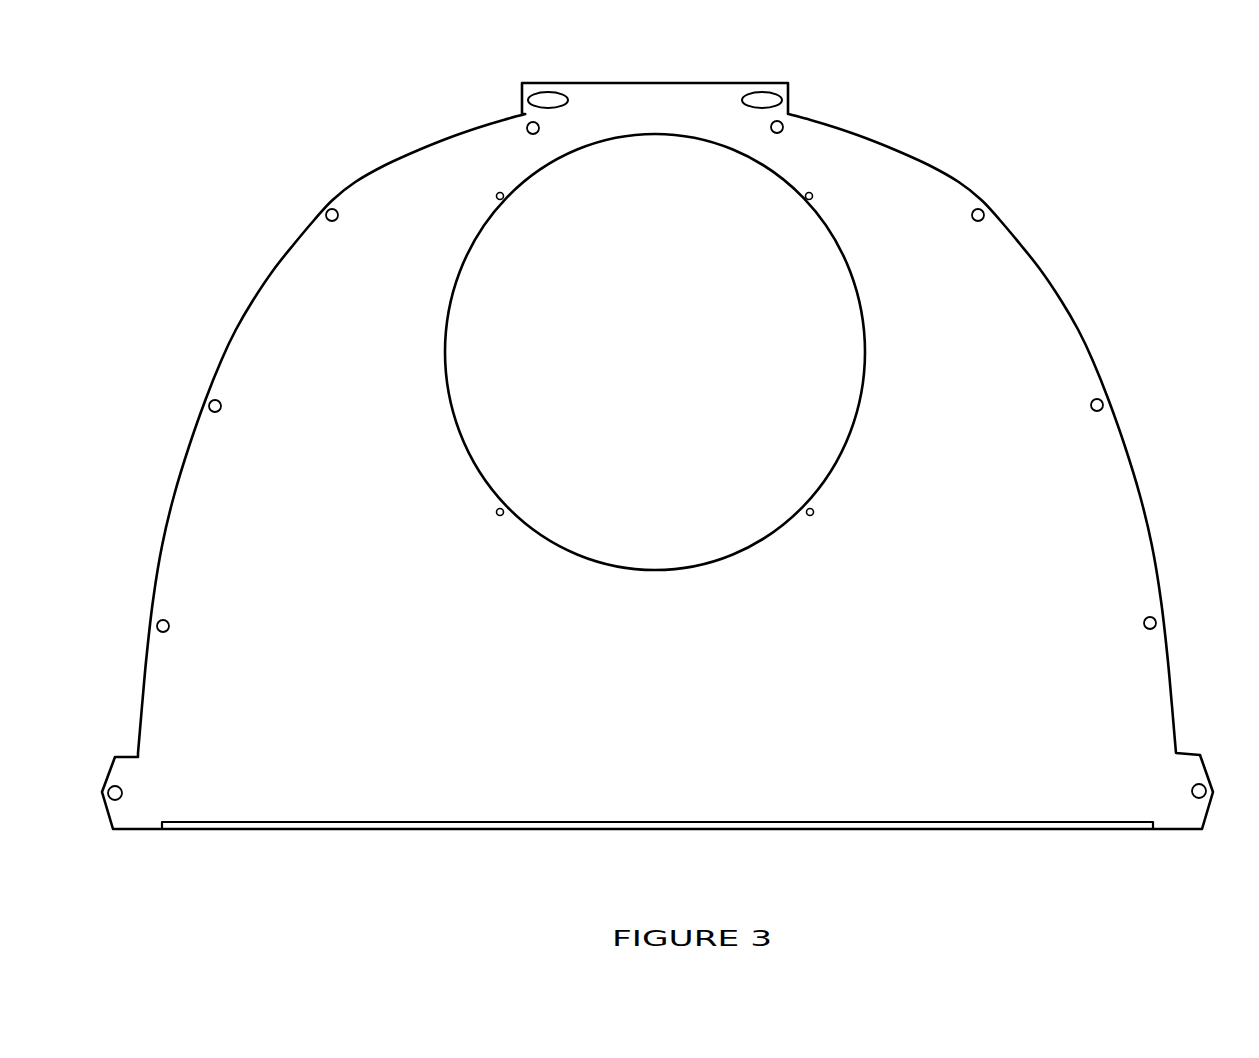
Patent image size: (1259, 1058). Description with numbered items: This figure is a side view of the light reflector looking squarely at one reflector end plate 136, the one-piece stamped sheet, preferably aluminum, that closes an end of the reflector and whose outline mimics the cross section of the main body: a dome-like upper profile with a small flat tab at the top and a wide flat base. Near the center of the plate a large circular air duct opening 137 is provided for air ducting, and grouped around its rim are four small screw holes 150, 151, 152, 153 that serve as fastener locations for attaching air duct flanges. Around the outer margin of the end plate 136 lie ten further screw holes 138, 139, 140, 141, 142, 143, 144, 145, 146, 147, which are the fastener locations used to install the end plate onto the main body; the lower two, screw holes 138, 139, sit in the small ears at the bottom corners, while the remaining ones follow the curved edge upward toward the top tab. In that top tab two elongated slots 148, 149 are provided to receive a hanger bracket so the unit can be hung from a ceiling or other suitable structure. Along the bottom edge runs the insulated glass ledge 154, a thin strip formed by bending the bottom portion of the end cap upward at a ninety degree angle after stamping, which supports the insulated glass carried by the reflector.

The reflector end plate 136 is at (955, 128).
The air duct opening 137 is at (447, 366).
The screw hole 138 is at (122, 792).
The screw hole 139 is at (1192, 790).
The screw hole 140 is at (169, 624).
The screw hole 141 is at (1144, 622).
The screw hole 142 is at (221, 404).
The screw hole 143 is at (1091, 403).
The screw hole 144 is at (333, 222).
The screw hole 145 is at (977, 222).
The screw hole 146 is at (530, 133).
The screw hole 147 is at (780, 133).
The slot for hanger bracket 148 is at (546, 94).
The slot for hanger bracket 149 is at (760, 94).
The screw hole 150 is at (503, 199).
The screw hole 151 is at (806, 199).
The screw hole 152 is at (503, 510).
The screw hole 153 is at (807, 510).
The insulated glass ledge 154 is at (287, 831).